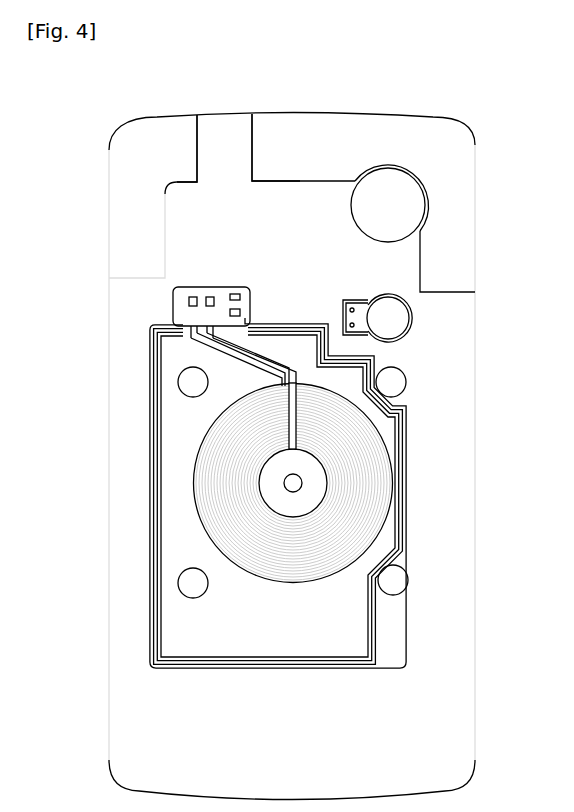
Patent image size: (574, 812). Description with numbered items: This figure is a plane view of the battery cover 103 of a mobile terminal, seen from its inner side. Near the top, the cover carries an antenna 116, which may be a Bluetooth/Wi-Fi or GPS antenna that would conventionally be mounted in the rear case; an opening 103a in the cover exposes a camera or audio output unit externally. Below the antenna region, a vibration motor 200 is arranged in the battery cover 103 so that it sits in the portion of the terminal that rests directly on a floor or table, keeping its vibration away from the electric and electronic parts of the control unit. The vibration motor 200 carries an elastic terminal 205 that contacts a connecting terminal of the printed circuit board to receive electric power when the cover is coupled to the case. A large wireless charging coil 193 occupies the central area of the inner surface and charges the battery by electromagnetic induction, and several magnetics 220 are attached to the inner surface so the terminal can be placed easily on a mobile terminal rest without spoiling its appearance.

The battery cover 103 is at (422, 707).
The camera window 103a is at (398, 206).
The antenna 116 is at (278, 343).
The wireless charging coil 193 is at (373, 485).
The vibration motor 200 is at (397, 317).
The elastic terminal 205 is at (357, 308).
The magnetic 220 is at (195, 383).